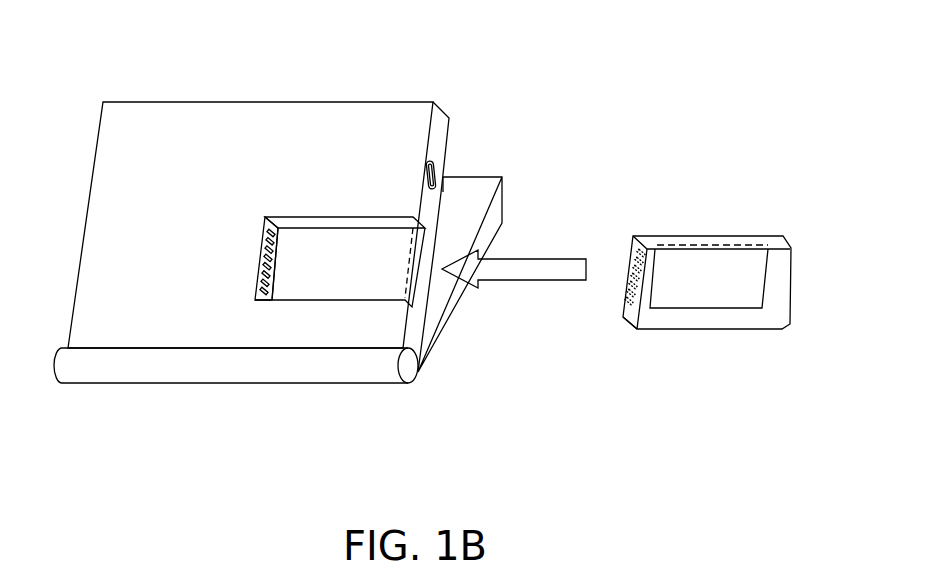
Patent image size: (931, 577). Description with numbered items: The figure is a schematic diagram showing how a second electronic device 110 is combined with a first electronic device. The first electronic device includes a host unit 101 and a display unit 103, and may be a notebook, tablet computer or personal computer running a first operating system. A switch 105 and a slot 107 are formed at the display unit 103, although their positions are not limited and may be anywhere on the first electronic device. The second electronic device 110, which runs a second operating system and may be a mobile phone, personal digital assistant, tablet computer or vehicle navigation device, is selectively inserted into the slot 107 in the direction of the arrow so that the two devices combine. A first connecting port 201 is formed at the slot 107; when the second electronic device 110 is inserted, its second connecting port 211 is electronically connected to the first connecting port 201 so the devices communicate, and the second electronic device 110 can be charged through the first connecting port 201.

The host unit 101 is at (446, 322).
The display unit 103 is at (436, 103).
The switch 105 is at (435, 168).
The slot 107 is at (428, 243).
The first connecting port 201 is at (264, 238).
The second connecting port 211 is at (622, 294).
The second electronic device 110 is at (679, 322).